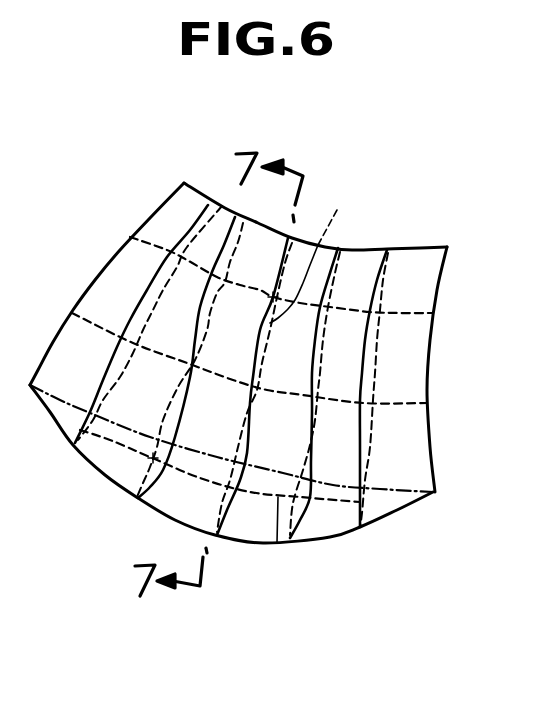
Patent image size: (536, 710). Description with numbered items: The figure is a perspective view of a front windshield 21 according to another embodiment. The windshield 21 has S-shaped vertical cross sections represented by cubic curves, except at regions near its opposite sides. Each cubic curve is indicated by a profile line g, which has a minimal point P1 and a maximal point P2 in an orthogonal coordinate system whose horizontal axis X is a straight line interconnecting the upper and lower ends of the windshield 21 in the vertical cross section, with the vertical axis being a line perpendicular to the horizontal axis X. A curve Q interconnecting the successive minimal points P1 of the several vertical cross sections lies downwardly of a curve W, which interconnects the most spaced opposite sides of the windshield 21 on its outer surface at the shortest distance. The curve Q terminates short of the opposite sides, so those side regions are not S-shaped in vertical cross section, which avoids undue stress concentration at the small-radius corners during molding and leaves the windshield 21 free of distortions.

The front windshield 21 is at (105, 288).
The profile line g is at (196, 333).
The minimal point P1 is at (165, 466).
The maximal point P2 is at (212, 273).
The horizontal axis X is at (309, 255).
The curve interconnecting minimal points Q is at (277, 547).
The curve interconnecting opposite sides W is at (335, 487).